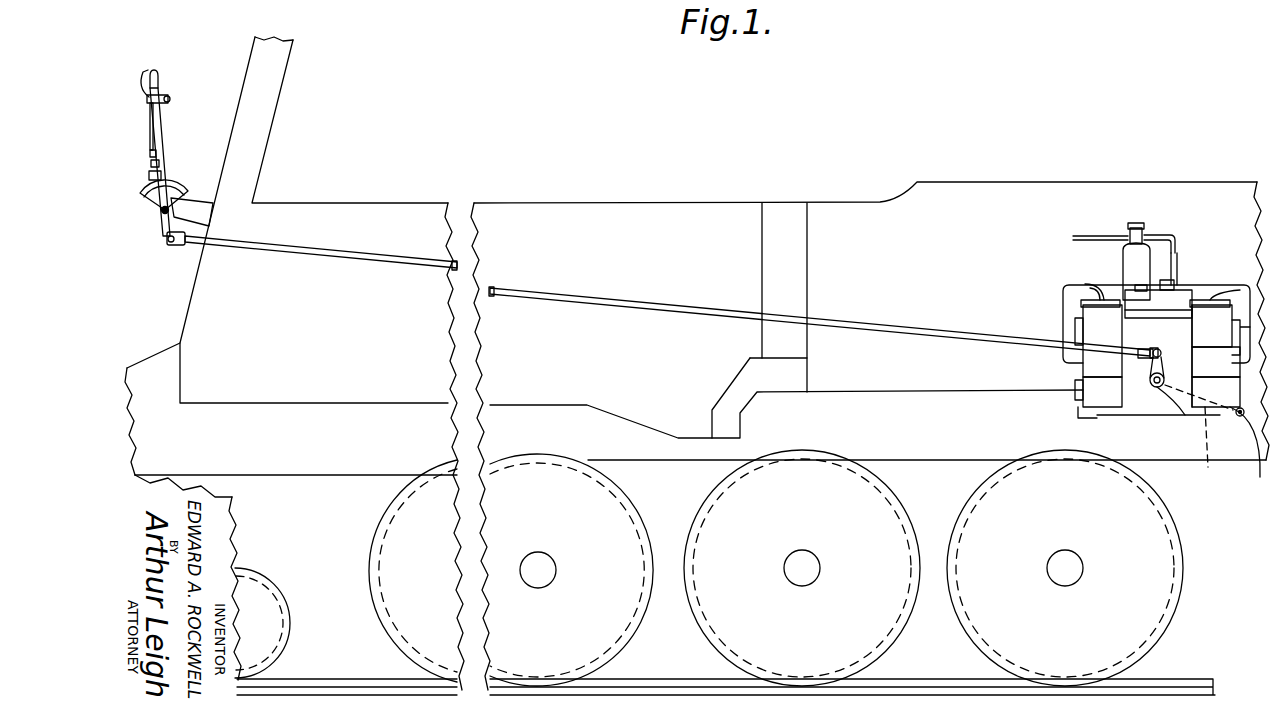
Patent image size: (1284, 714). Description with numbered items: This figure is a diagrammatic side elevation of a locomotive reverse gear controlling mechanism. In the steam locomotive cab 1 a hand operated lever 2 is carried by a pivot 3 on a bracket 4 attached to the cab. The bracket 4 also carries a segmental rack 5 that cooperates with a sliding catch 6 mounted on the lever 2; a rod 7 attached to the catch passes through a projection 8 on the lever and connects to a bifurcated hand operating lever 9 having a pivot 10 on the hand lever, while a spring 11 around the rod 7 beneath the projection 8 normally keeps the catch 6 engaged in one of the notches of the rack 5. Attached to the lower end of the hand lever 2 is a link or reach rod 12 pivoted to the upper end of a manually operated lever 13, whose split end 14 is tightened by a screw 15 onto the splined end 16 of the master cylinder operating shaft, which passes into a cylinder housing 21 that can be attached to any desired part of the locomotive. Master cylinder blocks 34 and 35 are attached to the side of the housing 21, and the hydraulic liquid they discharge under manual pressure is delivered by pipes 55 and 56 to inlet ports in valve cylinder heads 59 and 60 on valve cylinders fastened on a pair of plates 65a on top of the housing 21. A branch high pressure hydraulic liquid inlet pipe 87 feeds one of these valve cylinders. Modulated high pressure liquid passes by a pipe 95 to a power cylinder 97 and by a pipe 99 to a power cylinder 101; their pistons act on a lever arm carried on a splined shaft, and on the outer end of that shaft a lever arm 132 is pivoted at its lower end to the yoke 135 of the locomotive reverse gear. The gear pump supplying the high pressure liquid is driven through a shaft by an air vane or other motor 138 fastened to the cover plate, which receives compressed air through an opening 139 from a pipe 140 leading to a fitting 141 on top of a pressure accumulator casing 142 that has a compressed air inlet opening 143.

The steam locomotive cab 1 is at (281, 90).
The hand operated lever 2 is at (165, 73).
The pivot 3 is at (162, 215).
The bracket 4 is at (196, 200).
The segmental rack 5 is at (148, 205).
The sliding catch 6 is at (150, 178).
The rod 7 is at (150, 128).
The projection 8 is at (150, 153).
The bifurcated hand operating lever 9 is at (142, 78).
The pivot 10 is at (170, 97).
The spring 11 is at (152, 163).
The link or reach rod 12 is at (318, 263).
The manually operated lever 13 is at (1162, 398).
The split end 14 is at (1160, 395).
The screw 15 is at (1110, 412).
The splined end 16 is at (1150, 380).
The cylinder housing 21 is at (1140, 418).
The master cylinder block 34 is at (1080, 418).
The master cylinder block 35 is at (1240, 418).
The pipe 55 is at (1088, 283).
The pipe 56 is at (1216, 300).
The valve cylinder head 59 is at (1080, 303).
The valve cylinder head 60 is at (1200, 311).
The plates 65a is at (1162, 343).
The branch high pressure hydraulic liquid inlet pipe 87 is at (1180, 258).
The pipe 95 is at (1212, 300).
The power cylinder 97 is at (1216, 356).
The pipe 99 is at (1068, 312).
The power cylinder 101 is at (1066, 346).
The lever arm 132 is at (1208, 452).
The yoke 135 is at (1260, 462).
The air vane or other motor 138 is at (1180, 283).
The opening 139 is at (1168, 293).
The pipe 140 is at (1168, 235).
The fitting 141 is at (1141, 227).
The pressure accumulator casing 142 is at (1122, 263).
The compressed air inlet opening 143 is at (1128, 236).